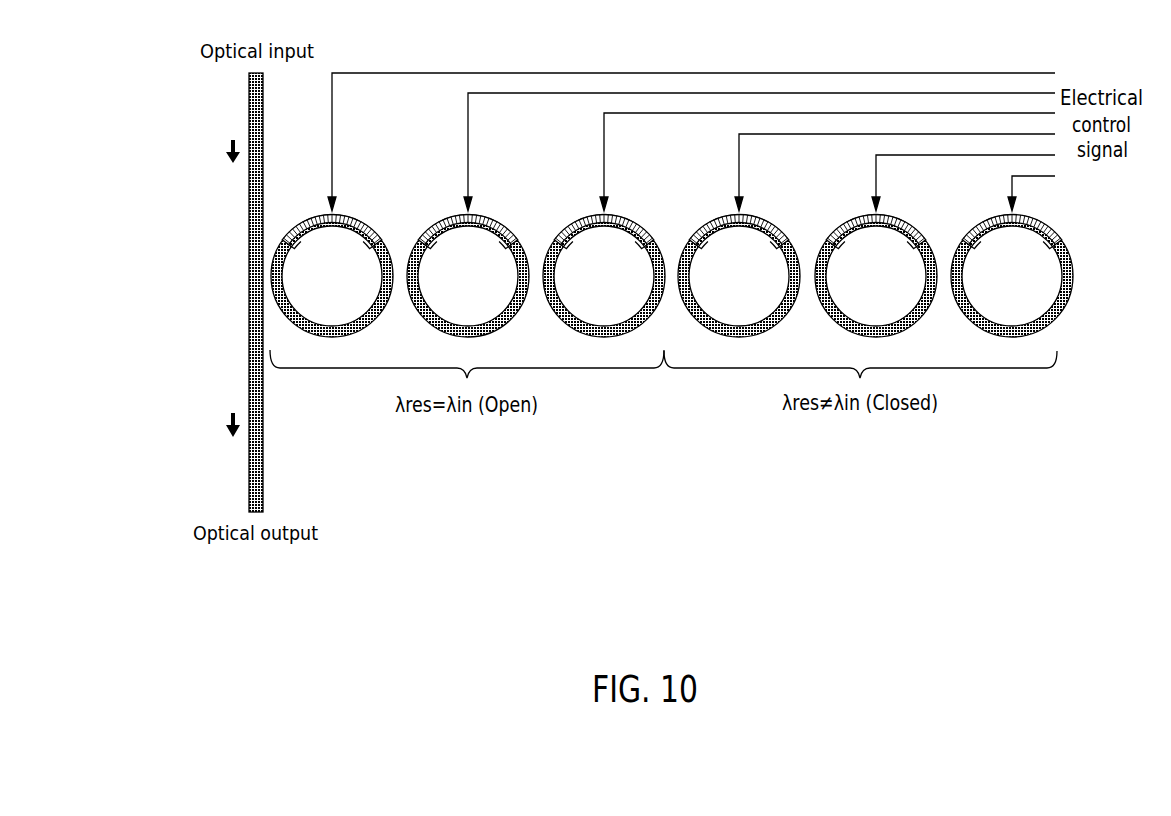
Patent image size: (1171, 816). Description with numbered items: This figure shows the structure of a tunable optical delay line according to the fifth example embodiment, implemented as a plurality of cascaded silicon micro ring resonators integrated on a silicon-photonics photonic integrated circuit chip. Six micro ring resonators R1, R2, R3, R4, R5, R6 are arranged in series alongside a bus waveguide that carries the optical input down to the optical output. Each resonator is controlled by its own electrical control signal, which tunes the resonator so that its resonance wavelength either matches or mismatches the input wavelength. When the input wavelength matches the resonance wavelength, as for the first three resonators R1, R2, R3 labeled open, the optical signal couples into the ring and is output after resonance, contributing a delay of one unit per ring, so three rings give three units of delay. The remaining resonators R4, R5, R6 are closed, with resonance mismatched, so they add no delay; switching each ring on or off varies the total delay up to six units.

The first ring resonator R1 is at (332, 275).
The second ring resonator R2 is at (468, 275).
The third ring resonator R3 is at (604, 275).
The fourth ring resonator R4 is at (739, 275).
The fifth ring resonator R5 is at (876, 275).
The sixth ring resonator R6 is at (1012, 275).